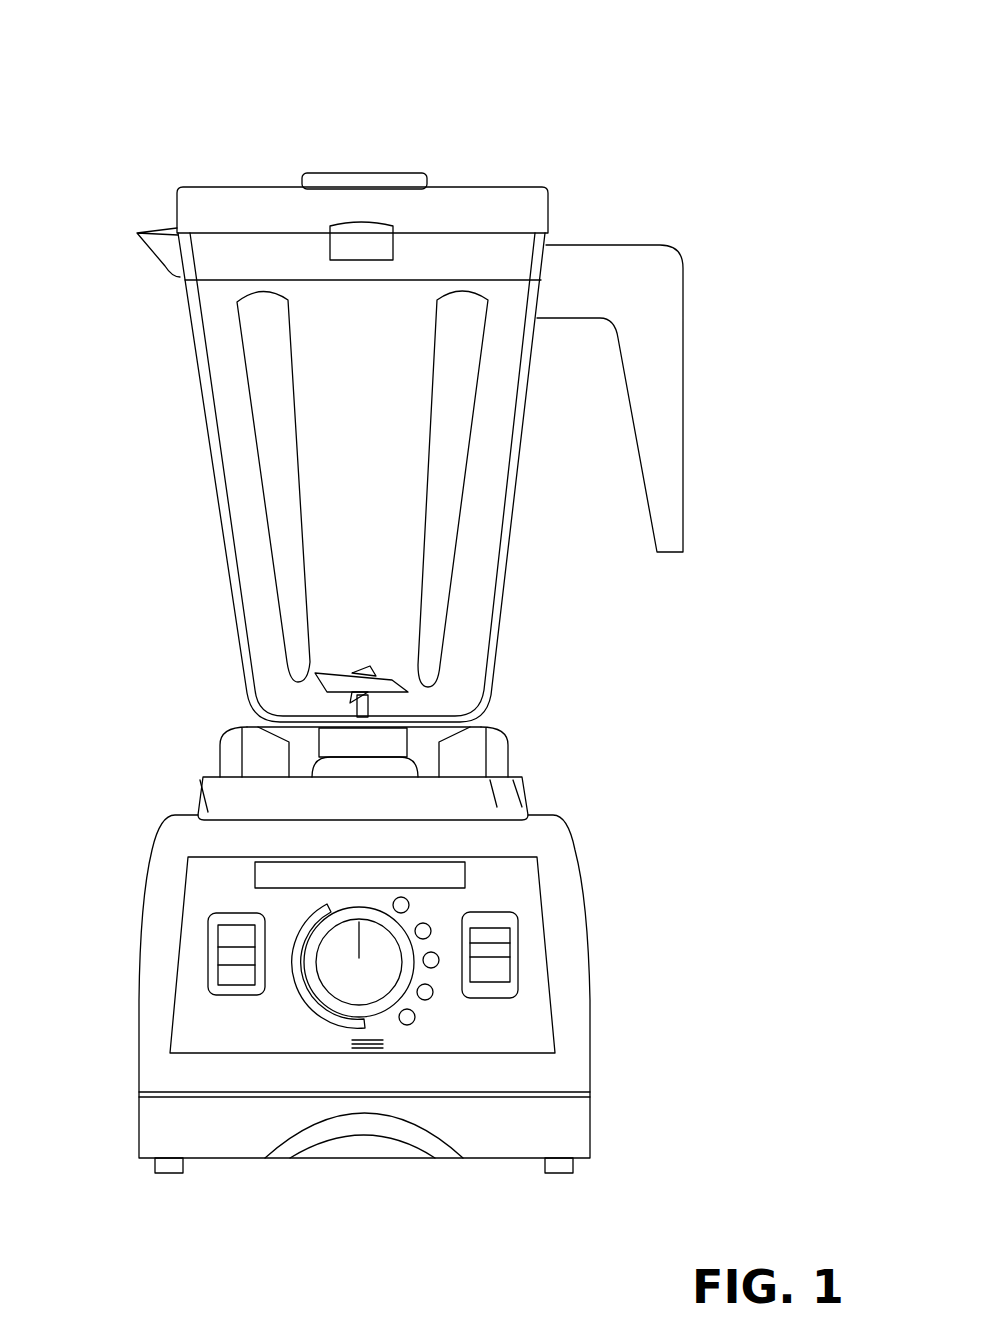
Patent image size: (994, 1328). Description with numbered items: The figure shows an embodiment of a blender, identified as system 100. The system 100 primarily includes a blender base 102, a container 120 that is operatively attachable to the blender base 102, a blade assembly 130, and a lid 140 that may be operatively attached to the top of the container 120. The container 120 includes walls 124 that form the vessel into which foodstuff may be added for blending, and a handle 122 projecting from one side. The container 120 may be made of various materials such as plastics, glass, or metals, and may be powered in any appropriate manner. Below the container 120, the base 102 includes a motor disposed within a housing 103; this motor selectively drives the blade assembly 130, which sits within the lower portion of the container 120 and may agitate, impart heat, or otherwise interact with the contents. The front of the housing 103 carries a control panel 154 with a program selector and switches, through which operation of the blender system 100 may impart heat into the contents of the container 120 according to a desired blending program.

The blender system 100 is at (585, 76).
The container 120 is at (142, 164).
The lid 140 is at (545, 203).
The handle 122 is at (665, 268).
The walls 124 is at (225, 527).
The blade assembly 130 is at (298, 660).
The blender base 102 is at (640, 1024).
The housing 103 is at (590, 970).
The control panel 154 is at (185, 945).